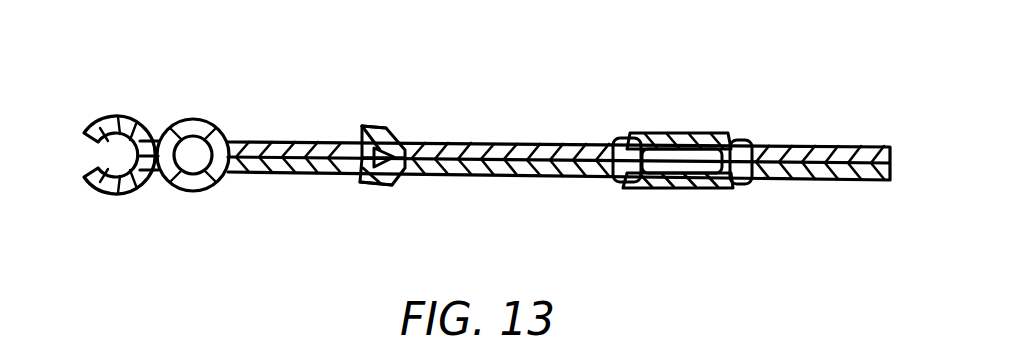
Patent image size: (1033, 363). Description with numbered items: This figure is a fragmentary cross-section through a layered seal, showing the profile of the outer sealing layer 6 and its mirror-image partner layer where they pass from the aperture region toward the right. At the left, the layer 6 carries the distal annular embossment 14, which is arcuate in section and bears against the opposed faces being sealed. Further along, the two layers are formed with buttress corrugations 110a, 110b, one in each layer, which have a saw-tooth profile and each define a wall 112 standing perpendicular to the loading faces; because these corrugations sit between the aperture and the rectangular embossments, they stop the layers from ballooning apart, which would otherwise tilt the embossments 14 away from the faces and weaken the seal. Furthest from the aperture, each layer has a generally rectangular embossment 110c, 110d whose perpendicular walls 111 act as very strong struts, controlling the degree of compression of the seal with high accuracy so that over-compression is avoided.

The annular embossment 14 is at (93, 122).
The outer sealing layer 6 is at (118, 118).
The wall 112 is at (364, 128).
The buttress corrugation 110a is at (393, 128).
The buttress corrugation 110b is at (393, 185).
The rectangular embossment 110c is at (672, 133).
The rectangular embossment 110d is at (670, 190).
The perpendicular wall 111 is at (626, 143).